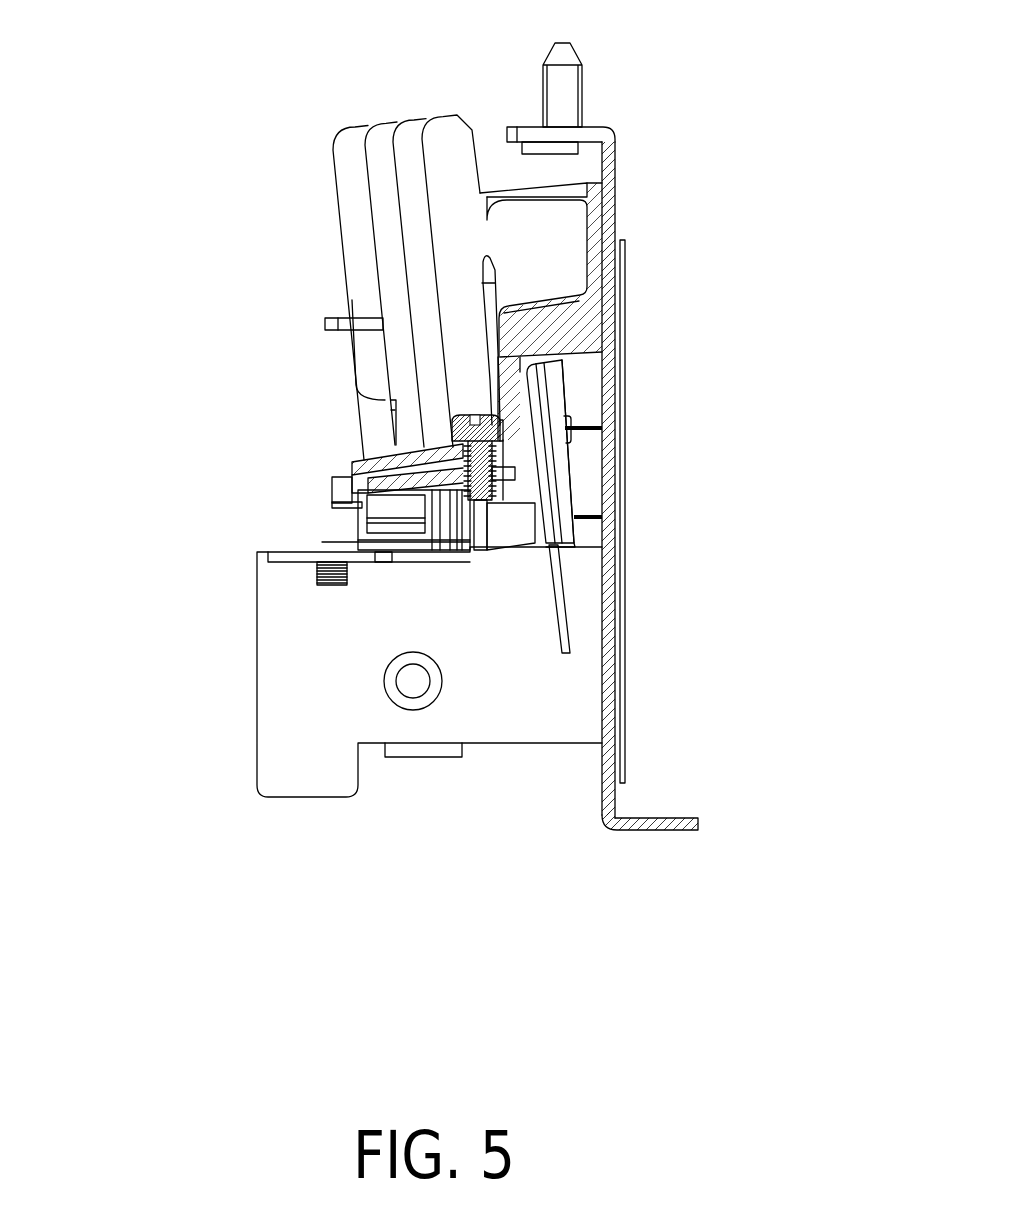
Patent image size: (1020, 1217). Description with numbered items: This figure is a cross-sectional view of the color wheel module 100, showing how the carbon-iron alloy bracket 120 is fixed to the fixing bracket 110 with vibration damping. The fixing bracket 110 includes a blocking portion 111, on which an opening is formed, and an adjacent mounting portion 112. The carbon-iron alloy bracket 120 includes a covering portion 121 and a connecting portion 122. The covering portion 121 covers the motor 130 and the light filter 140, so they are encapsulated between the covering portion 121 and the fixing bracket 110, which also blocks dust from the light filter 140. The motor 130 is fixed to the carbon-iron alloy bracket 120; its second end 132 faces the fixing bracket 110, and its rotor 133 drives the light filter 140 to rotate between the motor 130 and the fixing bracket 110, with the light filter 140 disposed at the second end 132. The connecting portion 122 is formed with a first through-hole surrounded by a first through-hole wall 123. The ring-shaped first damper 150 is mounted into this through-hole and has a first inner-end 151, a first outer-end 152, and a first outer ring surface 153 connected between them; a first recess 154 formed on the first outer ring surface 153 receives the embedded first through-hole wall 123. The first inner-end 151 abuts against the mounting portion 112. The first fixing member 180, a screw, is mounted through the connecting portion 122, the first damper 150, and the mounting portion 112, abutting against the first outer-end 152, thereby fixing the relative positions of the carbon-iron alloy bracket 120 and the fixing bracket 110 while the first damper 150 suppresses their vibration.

The color wheel module 100 is at (119, 56).
The fixing bracket 110 is at (616, 178).
The blocking portion 111 is at (606, 205).
The mounting portion 112 is at (333, 503).
The carbon-iron alloy bracket 120 is at (346, 338).
The covering portion 121 is at (382, 347).
The connecting portion 122 is at (440, 447).
The first through-hole wall 123 is at (390, 420).
The motor 130 is at (513, 563).
The second end 132 is at (588, 520).
The rotor 133 is at (569, 414).
The light filter 140 is at (572, 632).
The first damper 150 is at (696, 479).
The first inner-end 151 is at (575, 470).
The first outer-end 152 is at (585, 428).
The first outer ring surface 153 is at (554, 440).
The first recess 154 is at (540, 452).
The first fixing member 180 is at (473, 415).